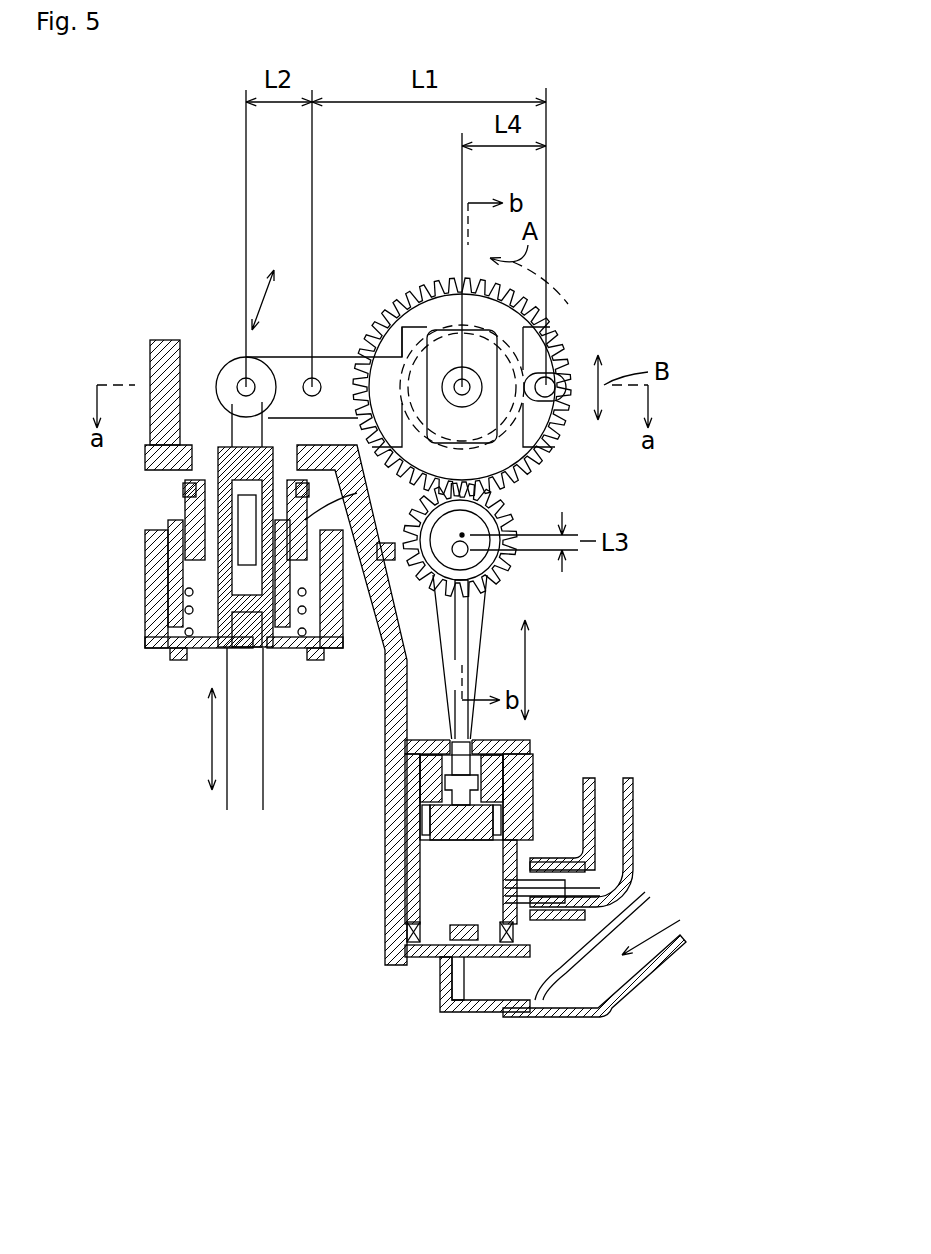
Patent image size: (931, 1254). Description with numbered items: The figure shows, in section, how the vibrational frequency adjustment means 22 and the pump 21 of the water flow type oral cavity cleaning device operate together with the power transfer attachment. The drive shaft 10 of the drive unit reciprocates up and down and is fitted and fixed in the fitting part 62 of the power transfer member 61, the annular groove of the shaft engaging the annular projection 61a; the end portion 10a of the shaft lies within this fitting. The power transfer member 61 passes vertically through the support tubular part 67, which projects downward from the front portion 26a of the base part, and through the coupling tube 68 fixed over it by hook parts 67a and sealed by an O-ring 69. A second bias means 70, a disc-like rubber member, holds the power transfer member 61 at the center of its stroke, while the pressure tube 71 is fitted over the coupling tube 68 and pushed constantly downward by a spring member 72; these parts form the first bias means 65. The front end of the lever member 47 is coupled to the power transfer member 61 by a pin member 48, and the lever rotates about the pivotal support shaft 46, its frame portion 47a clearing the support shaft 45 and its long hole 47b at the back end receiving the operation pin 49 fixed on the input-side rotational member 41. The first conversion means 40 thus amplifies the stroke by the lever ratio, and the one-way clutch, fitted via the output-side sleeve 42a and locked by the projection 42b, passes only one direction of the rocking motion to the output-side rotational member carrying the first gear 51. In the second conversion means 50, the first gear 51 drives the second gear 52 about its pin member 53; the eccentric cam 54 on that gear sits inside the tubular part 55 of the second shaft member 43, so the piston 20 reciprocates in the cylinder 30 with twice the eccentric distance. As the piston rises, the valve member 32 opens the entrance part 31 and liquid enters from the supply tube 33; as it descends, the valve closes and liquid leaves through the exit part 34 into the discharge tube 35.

The drive shaft 10 is at (255, 748).
The rod end portion 10a is at (180, 660).
The piston 20 is at (425, 822).
The pump 21 is at (540, 735).
The vibrational frequency adjustment means 22 is at (630, 240).
The front portion 26a is at (182, 358).
The cylinder 30 is at (520, 770).
The entrance part 31 is at (468, 1014).
The valve member 32 is at (440, 948).
The supply tube 33 is at (645, 975).
The exit part 34 is at (585, 886).
The discharge tube 35 is at (633, 800).
The first conversion means 40 is at (369, 280).
The input-side rotational member 41 is at (440, 300).
The output-side sleeve 42a is at (458, 295).
The projection 42b is at (572, 300).
The second shaft member 43 is at (438, 677).
The support shaft 45 is at (413, 305).
The pivotal support shaft 46 is at (310, 377).
The lever member 47 is at (345, 352).
The frame portion 47a is at (523, 348).
The long hole 47b is at (562, 382).
The pin member 48 is at (240, 360).
The operation pin 49 is at (563, 410).
The second conversion means 50 is at (583, 458).
The first gear 51 is at (548, 457).
The second gear 52 is at (500, 592).
The pin member 53 is at (452, 547).
The eccentric cam 54 is at (372, 565).
The tubular part 55 is at (473, 572).
The power transfer member 61 is at (218, 425).
The annular projection 61a is at (248, 637).
The fitting part 62 is at (152, 650).
The first bias means 65 is at (210, 645).
The support tubular part 67 is at (190, 520).
The hook parts 67a is at (357, 493).
The coupling tube 68 is at (172, 546).
The O-ring 69 is at (185, 490).
The second bias means 70 is at (195, 598).
The pressure tube 71 is at (150, 574).
The spring member 72 is at (180, 626).